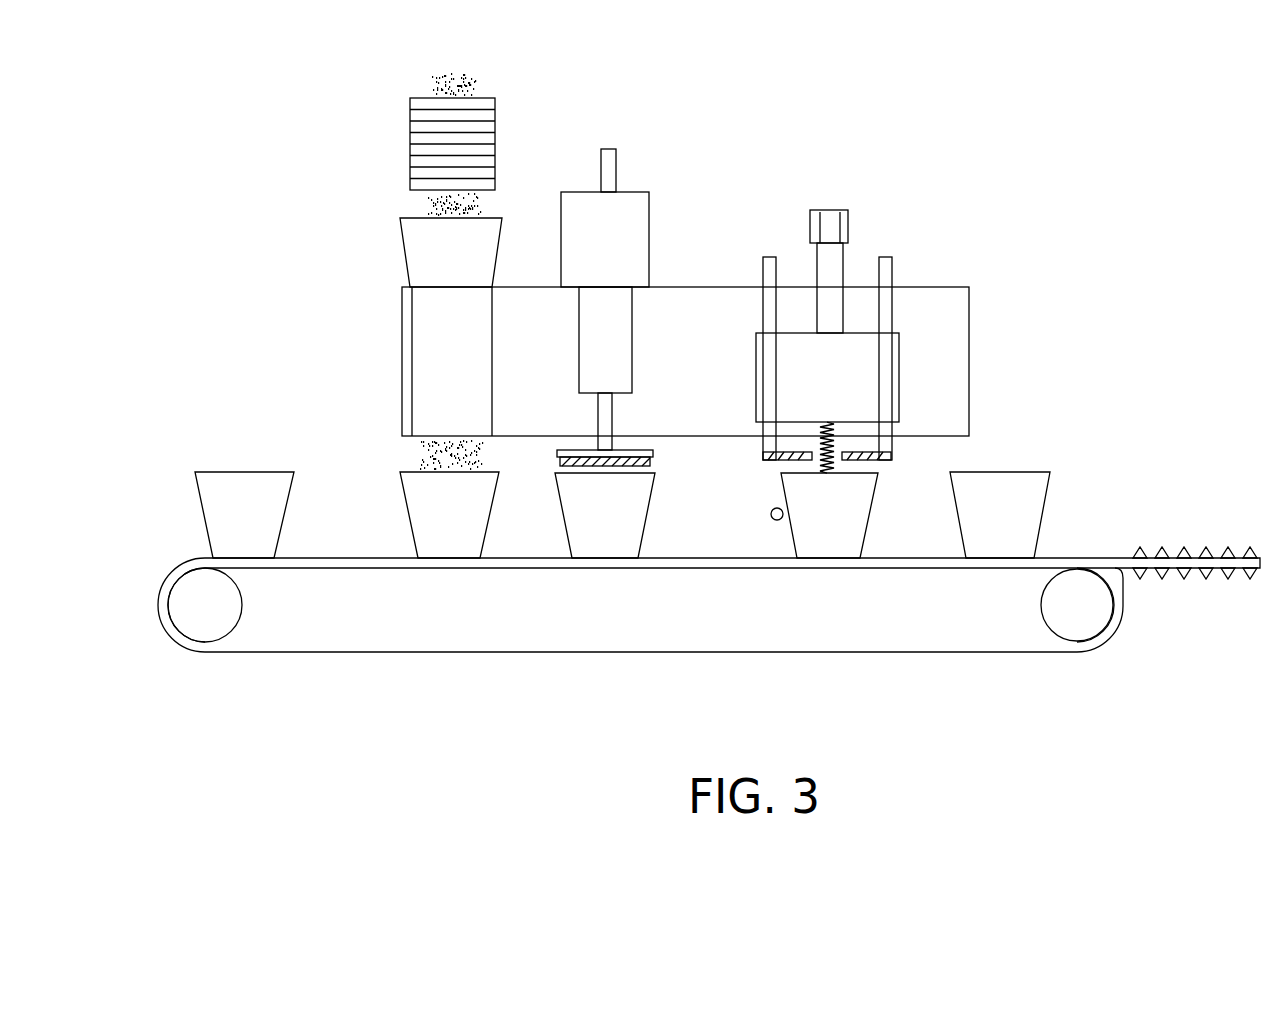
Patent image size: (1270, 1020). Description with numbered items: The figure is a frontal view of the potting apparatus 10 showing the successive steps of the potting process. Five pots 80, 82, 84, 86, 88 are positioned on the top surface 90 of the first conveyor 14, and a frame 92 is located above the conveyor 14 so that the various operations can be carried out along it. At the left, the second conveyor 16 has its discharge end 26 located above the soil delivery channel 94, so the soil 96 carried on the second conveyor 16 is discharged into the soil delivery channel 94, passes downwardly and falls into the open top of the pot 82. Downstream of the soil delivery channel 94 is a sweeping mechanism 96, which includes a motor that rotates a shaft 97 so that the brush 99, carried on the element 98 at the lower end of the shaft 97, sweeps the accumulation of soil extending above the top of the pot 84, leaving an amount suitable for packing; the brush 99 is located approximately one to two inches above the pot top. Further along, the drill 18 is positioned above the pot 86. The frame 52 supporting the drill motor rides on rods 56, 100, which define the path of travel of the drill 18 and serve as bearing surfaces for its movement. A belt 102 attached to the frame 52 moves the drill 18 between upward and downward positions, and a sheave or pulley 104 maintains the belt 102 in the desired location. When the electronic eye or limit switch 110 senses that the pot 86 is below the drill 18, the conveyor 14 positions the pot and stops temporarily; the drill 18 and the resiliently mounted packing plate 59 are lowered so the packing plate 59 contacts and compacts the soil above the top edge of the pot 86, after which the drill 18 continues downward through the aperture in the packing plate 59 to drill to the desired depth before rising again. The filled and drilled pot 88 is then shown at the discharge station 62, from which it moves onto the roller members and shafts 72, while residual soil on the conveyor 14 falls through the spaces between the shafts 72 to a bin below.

The potting apparatus 10 is at (1083, 393).
The first conveyor 14 is at (200, 557).
The second conveyor 16 is at (492, 133).
The drill 18 is at (815, 460).
The discharge end 26 is at (412, 137).
The frame 52 is at (756, 360).
The rod 56 is at (893, 305).
The packing plate 59 is at (880, 462).
The discharge station 62 is at (1092, 556).
The roller members and shafts 72 is at (1225, 552).
The pot 80 is at (280, 510).
The pot 82 is at (482, 520).
The pot 84 is at (637, 517).
The pot 86 is at (858, 522).
The pot 88 is at (1040, 512).
The top surface 90 is at (360, 556).
The frame 92 is at (970, 360).
The soil delivery channel 94 is at (405, 258).
The soil / sweeping mechanism 96 is at (478, 77).
The shaft 97 is at (598, 416).
The press plate 98 is at (636, 436).
The brush 99 is at (653, 460).
The rod 100 is at (765, 273).
The belt 102 is at (817, 268).
The sheave or pulley 104 is at (848, 217).
The electronic eye or limit switch 110 is at (776, 521).